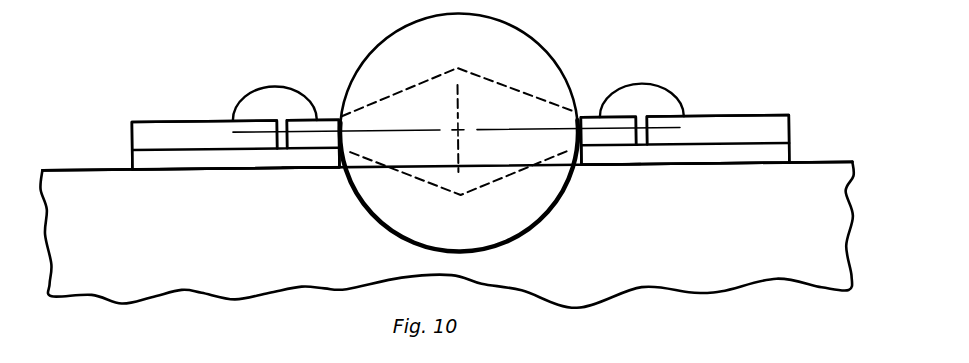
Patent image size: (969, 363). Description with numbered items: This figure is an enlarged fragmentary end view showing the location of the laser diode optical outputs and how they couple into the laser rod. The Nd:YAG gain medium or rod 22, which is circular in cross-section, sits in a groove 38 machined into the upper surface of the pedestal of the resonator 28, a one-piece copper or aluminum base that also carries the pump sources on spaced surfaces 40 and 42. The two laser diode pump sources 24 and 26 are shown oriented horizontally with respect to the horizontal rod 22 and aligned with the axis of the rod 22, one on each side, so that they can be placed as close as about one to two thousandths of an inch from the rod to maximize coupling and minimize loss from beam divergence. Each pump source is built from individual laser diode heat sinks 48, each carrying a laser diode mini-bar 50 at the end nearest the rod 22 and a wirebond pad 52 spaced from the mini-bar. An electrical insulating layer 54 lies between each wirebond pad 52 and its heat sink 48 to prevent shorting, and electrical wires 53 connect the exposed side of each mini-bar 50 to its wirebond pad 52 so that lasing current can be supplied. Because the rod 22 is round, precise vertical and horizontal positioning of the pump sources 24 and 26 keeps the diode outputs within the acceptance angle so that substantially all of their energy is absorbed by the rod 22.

The Nd:YAG gain medium or rod 22 is at (533, 34).
The pump source 24 is at (700, 99).
The pump source 26 is at (218, 86).
The resonator 28 is at (122, 259).
The groove 38 is at (516, 230).
The spaced surface 40 is at (832, 166).
The spaced surface 42 is at (66, 166).
The laser diode heat sink 48 is at (276, 153).
The laser diode mini-bar 50 is at (328, 116).
The wirebond pad 52 is at (172, 127).
The electrical wires 53 is at (275, 84).
The electrical insulating layer 54 is at (195, 149).